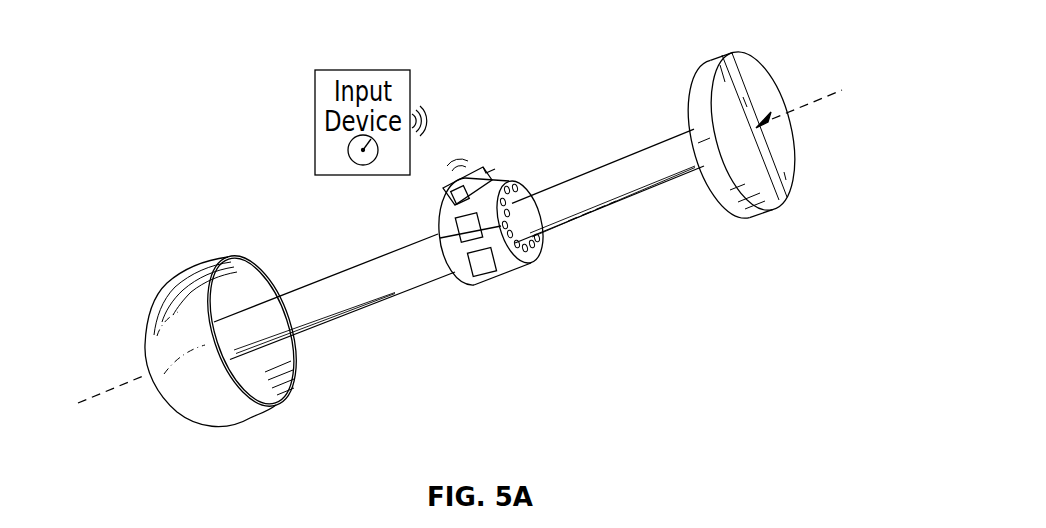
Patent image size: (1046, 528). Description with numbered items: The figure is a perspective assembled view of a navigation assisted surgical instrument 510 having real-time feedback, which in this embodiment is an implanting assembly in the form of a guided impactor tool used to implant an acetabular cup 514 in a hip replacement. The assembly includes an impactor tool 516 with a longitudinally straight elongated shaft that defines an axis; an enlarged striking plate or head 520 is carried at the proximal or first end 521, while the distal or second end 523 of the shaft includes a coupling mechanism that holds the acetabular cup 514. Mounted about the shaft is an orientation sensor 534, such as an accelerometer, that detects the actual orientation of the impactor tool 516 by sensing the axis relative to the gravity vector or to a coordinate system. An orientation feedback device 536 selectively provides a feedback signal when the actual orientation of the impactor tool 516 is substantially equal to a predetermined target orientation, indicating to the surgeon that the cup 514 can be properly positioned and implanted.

The navigation assisted surgical instrument 510 is at (568, 124).
The acetabular cup 514 is at (206, 403).
The impactor tool 516 is at (564, 197).
The striking plate or head 520 is at (746, 85).
The proximal or first end 521 is at (711, 57).
The distal or second end 523 is at (293, 292).
The orientation sensor 534 is at (448, 236).
The orientation feedback device 536 is at (545, 246).